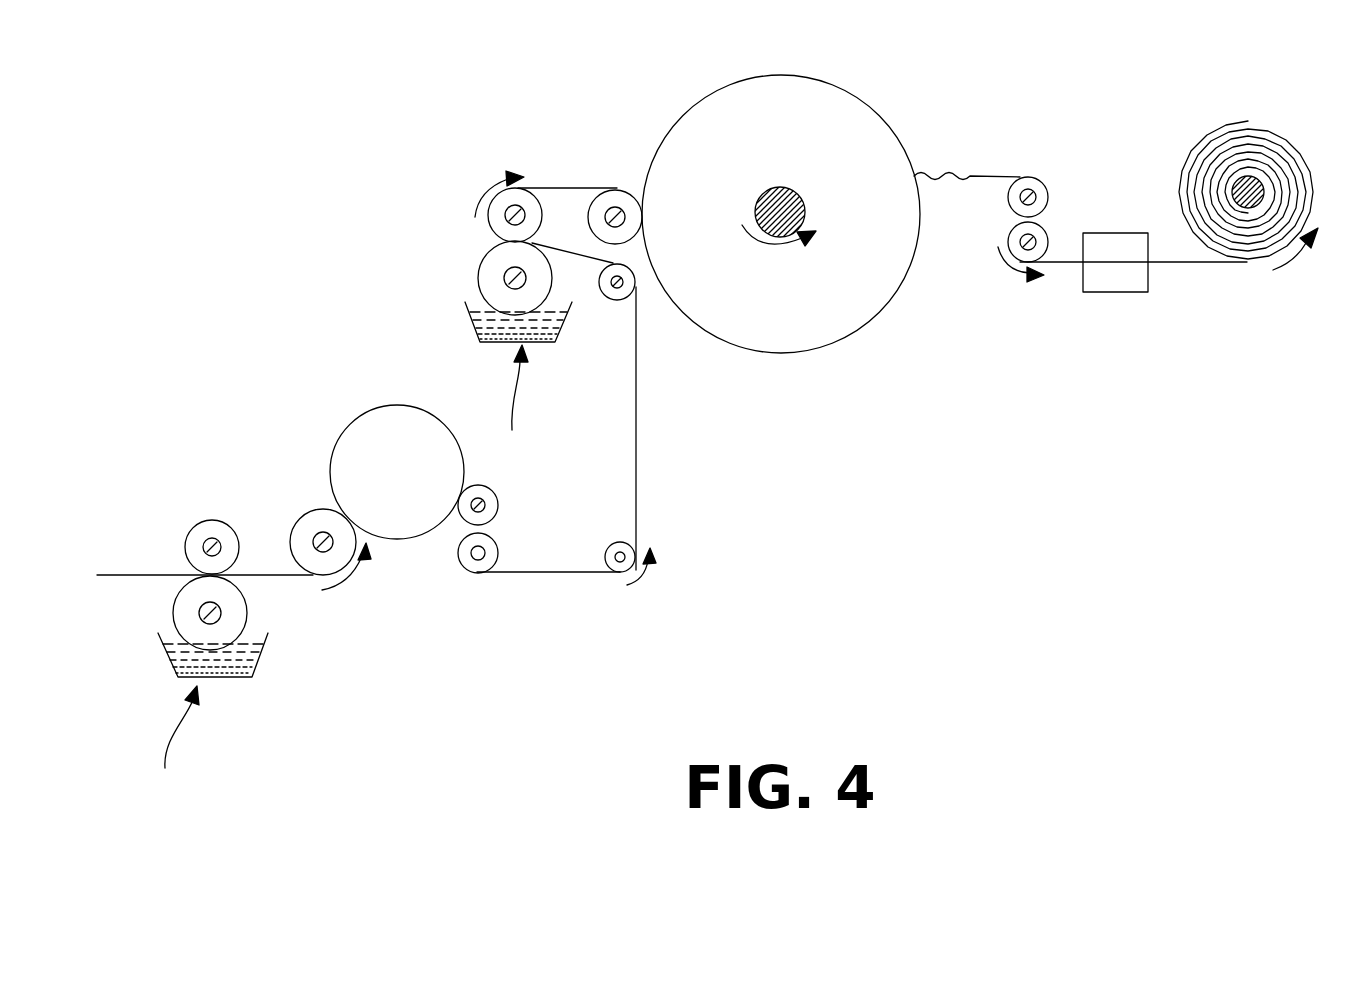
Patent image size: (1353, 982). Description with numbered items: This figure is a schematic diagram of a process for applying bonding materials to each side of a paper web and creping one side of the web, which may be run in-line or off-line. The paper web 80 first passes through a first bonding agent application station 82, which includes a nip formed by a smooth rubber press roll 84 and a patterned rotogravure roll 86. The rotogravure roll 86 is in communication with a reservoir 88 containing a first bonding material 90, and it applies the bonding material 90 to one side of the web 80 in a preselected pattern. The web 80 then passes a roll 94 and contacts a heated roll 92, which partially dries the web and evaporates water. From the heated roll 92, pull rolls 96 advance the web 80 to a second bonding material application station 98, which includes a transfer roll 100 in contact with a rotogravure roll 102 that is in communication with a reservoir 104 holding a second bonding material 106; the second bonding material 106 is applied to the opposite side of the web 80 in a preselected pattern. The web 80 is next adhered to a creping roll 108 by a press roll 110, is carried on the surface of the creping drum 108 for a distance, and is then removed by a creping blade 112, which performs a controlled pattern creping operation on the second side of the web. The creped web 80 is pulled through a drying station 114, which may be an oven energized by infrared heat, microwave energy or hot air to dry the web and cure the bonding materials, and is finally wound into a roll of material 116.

The paper web 80 is at (113, 575).
The first bonding agent application station 82 is at (172, 744).
The smooth rubber press roll 84 is at (203, 530).
The patterned rotogravure roll 86 is at (246, 606).
The reservoir 88 is at (165, 658).
The first bonding material 90 is at (258, 655).
The heated roll 92 is at (365, 437).
The roll 94 is at (311, 520).
The pull rolls 96 is at (497, 505).
The second bonding material application station 98 is at (513, 404).
The transfer roll 100 is at (497, 229).
The rotogravure roll 102 is at (487, 281).
The reservoir 104 is at (472, 328).
The second bonding material 106 is at (560, 330).
The creping roll 108 is at (823, 327).
The press roll 110 is at (624, 200).
The creping blade 112 is at (913, 175).
The drying station 114 is at (1103, 231).
The roll of material 116 is at (1245, 133).